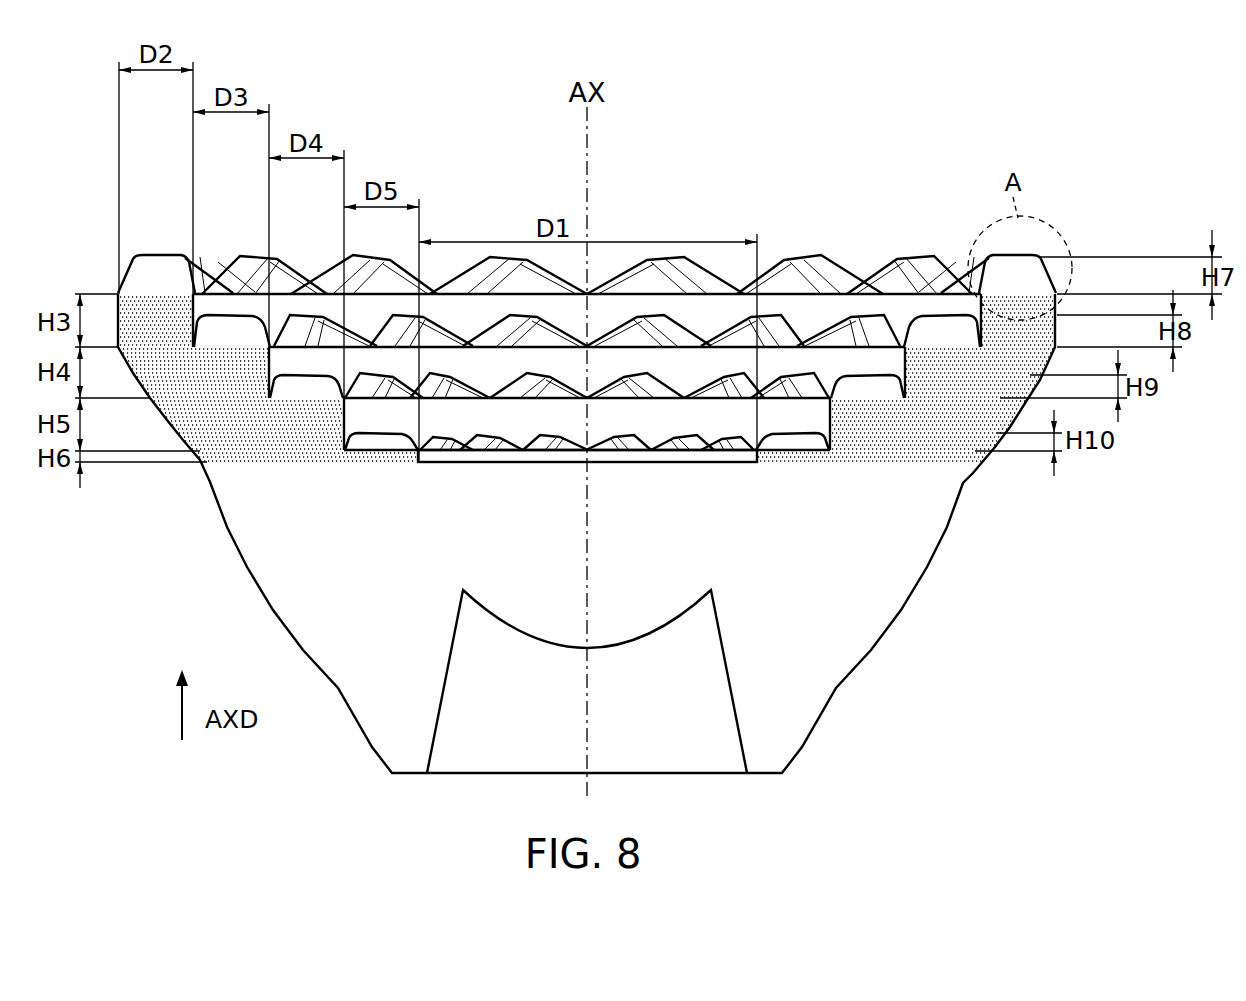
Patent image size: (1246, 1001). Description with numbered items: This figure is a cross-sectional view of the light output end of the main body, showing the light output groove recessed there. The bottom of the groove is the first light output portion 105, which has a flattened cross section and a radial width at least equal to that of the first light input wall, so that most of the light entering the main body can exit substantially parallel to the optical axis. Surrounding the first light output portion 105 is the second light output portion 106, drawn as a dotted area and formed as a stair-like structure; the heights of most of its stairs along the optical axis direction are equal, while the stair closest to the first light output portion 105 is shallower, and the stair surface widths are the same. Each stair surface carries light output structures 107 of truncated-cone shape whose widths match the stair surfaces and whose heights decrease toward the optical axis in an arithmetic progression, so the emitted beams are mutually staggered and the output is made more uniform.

The first light output portion 105 is at (530, 463).
The second light output portion 106 is at (240, 437).
The light output structure 107 is at (135, 276).